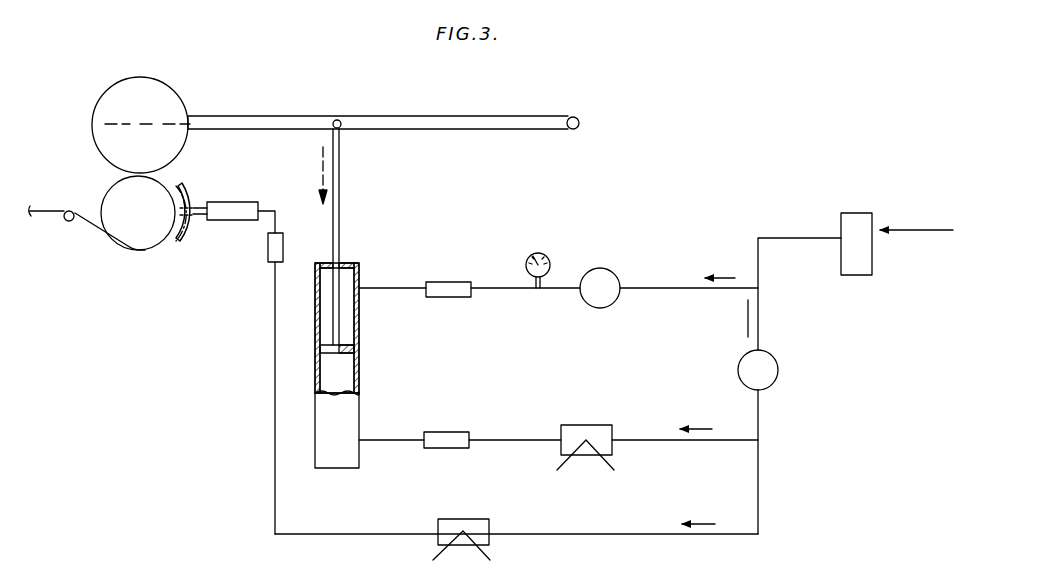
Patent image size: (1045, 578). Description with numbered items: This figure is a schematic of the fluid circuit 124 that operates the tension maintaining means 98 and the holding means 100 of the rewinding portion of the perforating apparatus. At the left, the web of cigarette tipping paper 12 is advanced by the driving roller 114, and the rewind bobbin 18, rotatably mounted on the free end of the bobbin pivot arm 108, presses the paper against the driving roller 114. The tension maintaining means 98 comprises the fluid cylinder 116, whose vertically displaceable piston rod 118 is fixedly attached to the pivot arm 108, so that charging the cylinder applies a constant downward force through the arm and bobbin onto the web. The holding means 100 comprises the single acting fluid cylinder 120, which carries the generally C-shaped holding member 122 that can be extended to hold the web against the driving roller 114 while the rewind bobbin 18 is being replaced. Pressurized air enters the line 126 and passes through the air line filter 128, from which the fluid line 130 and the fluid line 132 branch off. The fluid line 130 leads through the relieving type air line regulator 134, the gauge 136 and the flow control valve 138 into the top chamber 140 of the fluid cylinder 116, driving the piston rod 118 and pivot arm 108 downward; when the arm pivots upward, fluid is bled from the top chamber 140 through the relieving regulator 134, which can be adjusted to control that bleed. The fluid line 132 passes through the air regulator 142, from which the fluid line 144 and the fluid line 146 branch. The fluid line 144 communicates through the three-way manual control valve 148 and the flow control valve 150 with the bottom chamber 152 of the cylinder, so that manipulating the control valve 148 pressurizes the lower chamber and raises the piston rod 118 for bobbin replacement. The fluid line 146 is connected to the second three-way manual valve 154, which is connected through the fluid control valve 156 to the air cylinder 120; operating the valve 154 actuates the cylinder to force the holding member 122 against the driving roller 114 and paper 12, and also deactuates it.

The cigarette tipping paper 12 is at (60, 210).
The rewind bobbin 18 is at (163, 103).
The tension maintaining means 98 is at (412, 203).
The holding means 100 is at (242, 199).
The bobbin pivot arm 108 is at (433, 120).
The driving roller 114 is at (132, 233).
The fluid cylinder 116 is at (358, 315).
The piston rod 118 is at (340, 170).
The single acting fluid cylinder 120 is at (246, 214).
The holding member 122 is at (185, 190).
The fluid circuit 124 is at (684, 188).
The line 126 is at (885, 226).
The air line filter 128 is at (865, 265).
The fluid line 130 is at (655, 290).
The fluid line 132 is at (758, 420).
The relieving type air line regulator 134 is at (604, 268).
The gauge 136 is at (540, 253).
The flow control valve 138 is at (438, 279).
The top chamber 140 is at (346, 276).
The air regulator 142 is at (764, 352).
The fluid line 144 is at (655, 441).
The fluid line 146 is at (727, 534).
The three-way manual control valve 148 is at (599, 427).
The flow control valve 150 is at (447, 435).
The bottom chamber 152 is at (338, 373).
The three-way manual valve 154 is at (478, 523).
The fluid control valve 156 is at (270, 253).